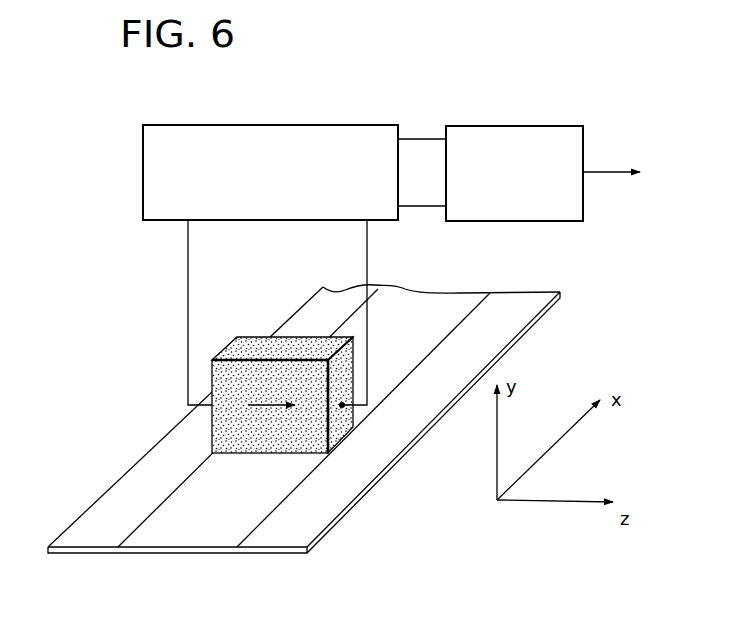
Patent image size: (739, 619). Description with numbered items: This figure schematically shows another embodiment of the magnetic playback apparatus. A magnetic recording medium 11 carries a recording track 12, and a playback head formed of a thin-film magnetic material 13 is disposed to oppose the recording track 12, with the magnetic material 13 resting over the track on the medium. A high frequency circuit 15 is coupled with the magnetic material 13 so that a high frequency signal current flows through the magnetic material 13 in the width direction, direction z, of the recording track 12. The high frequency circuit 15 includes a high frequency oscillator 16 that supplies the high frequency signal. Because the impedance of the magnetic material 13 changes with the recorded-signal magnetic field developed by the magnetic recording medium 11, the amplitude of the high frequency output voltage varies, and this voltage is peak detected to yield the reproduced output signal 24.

The magnetic recording medium 11 is at (358, 482).
The recording track 12 is at (198, 537).
The thin-film magnetic material 13 is at (256, 338).
The high frequency circuit 15 is at (316, 124).
The high frequency oscillator 16 is at (531, 125).
The reproduced output signal 24 is at (609, 171).